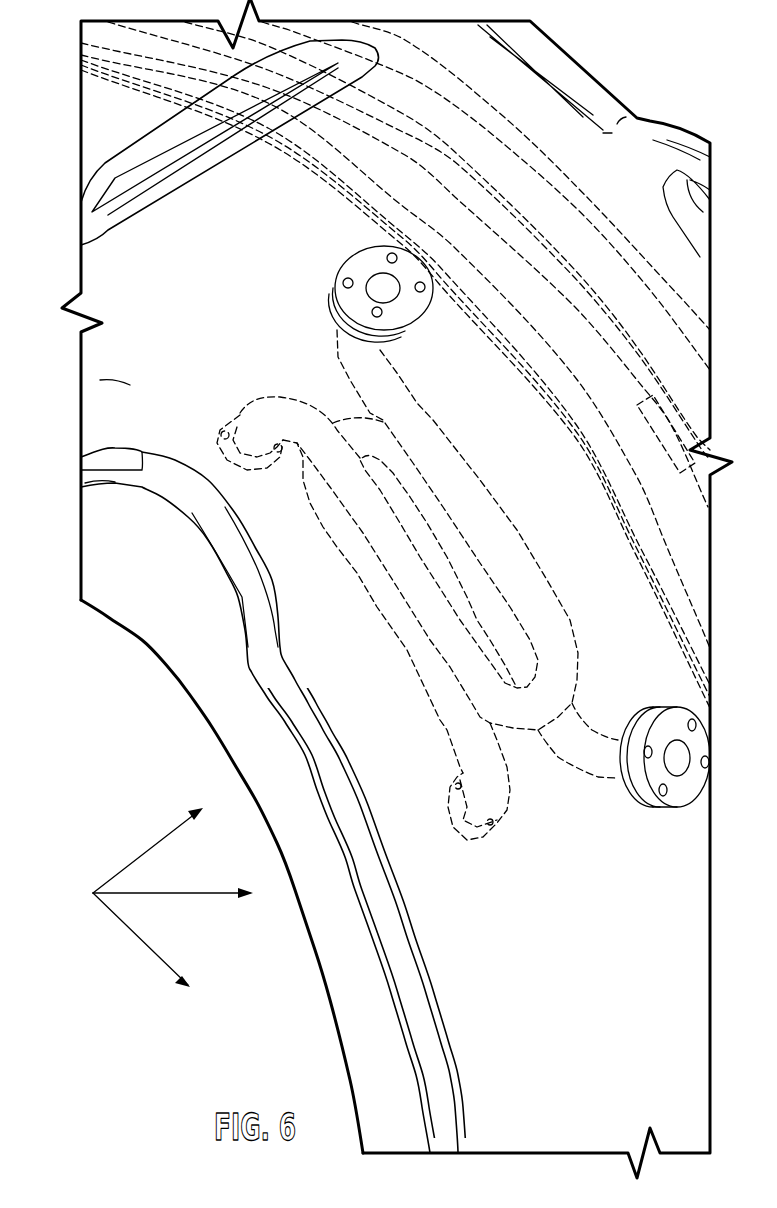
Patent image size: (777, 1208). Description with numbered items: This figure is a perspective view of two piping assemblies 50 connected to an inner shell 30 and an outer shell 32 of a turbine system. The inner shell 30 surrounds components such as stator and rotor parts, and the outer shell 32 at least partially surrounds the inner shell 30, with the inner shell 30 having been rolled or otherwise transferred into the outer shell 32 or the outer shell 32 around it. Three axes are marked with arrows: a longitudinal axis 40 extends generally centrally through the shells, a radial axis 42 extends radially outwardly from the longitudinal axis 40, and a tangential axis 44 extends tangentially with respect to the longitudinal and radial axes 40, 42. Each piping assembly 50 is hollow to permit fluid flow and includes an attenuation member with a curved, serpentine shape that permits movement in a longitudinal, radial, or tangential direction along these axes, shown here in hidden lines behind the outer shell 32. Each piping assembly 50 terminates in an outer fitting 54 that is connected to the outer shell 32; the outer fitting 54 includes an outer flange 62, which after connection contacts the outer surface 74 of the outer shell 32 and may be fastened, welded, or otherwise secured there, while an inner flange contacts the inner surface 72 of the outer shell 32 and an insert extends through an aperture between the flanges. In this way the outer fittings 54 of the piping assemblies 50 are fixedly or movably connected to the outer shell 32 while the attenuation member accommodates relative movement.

The inner shell 30 is at (155, 500).
The outer shell 32 is at (155, 299).
The longitudinal axis 40 is at (153, 838).
The radial axis 42 is at (193, 890).
The tangential axis 44 is at (150, 953).
The piping assembly 50 is at (492, 460).
The outer fitting 54 is at (349, 238).
The outer flange 62 is at (417, 310).
The inner surface 72 is at (81, 470).
The outer surface 74 is at (100, 380).